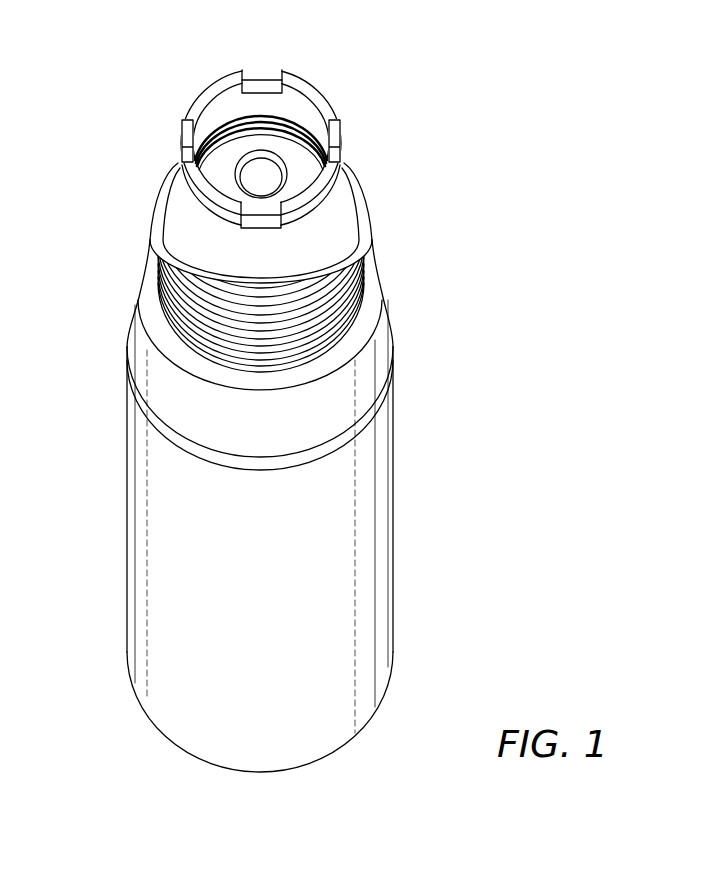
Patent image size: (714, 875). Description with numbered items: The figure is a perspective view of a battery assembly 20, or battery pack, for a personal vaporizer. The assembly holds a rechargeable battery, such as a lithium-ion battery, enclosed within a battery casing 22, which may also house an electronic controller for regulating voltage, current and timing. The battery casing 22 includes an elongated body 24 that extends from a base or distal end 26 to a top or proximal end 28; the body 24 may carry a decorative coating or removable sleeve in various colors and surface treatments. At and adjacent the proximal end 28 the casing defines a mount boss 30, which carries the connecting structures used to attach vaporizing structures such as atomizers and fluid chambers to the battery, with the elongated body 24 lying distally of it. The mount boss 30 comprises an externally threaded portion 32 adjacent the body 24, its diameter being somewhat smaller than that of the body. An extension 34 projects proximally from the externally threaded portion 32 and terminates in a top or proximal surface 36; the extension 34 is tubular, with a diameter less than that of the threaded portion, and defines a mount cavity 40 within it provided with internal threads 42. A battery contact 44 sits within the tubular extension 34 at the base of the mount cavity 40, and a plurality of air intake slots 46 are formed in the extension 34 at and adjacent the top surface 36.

The battery assembly 20 is at (518, 392).
The battery casing 22 is at (408, 580).
The elongated body 24 is at (190, 567).
The distal end 26 is at (343, 752).
The proximal end 28 is at (313, 74).
The mount boss 30 is at (363, 118).
The externally threaded portion 32 is at (367, 244).
The extension 34 is at (208, 222).
The top surface 36 is at (212, 86).
The mount cavity 40 is at (227, 98).
The internal threads 42 is at (212, 137).
The battery contact 44 is at (258, 176).
The air intake slots 46 is at (268, 82).